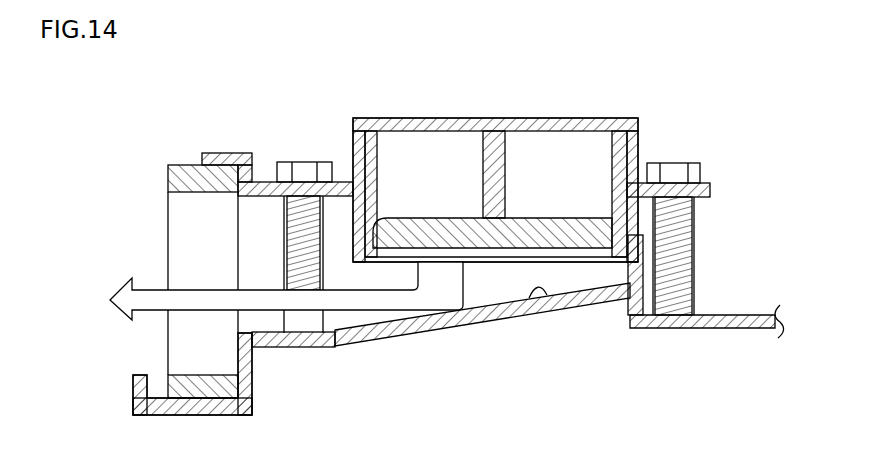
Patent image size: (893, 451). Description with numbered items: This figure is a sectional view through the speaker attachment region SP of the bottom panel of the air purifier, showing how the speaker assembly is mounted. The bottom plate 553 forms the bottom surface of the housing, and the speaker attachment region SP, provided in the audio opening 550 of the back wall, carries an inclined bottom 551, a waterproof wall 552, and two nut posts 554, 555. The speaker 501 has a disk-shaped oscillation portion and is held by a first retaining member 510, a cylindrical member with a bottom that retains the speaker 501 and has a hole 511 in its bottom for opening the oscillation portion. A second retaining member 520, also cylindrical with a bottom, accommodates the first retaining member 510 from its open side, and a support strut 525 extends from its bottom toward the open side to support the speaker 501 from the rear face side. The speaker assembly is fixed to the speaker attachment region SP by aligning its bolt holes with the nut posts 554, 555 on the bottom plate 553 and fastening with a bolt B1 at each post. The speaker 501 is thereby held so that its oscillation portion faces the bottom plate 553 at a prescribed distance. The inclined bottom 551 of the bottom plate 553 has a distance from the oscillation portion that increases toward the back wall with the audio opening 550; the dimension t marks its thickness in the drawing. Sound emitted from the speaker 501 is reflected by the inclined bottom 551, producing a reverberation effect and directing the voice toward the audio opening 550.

The second retaining member 520 is at (595, 118).
The support strut 525 is at (483, 167).
The speaker 501 is at (432, 228).
The hole 511 is at (563, 256).
The first retaining member 510 is at (593, 262).
The audio opening 550 is at (192, 175).
The nut post 554 is at (327, 318).
The bolt B1 is at (305, 172).
The nut post 555 is at (695, 273).
The waterproof wall 552 is at (697, 244).
The bottom plate 553 is at (717, 328).
The inclined bottom 551 is at (492, 318).
The thickness t is at (548, 310).
The speaker attachment region SP is at (265, 123).